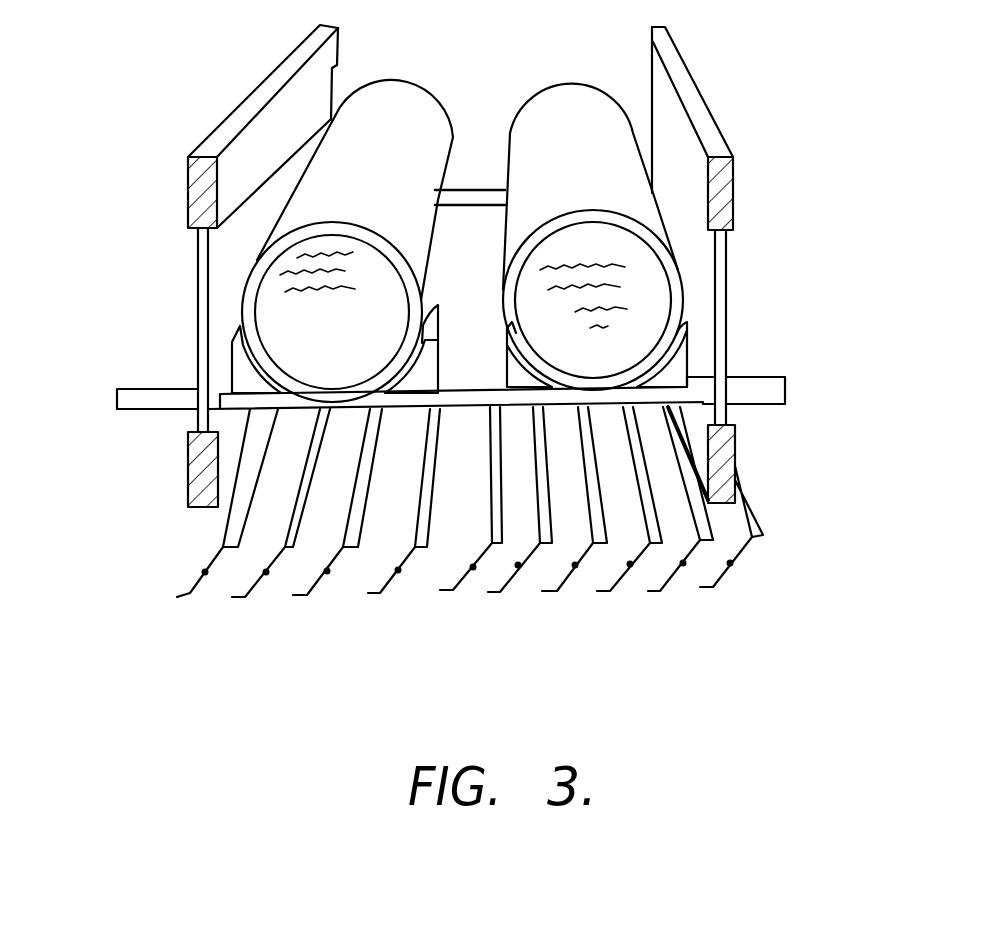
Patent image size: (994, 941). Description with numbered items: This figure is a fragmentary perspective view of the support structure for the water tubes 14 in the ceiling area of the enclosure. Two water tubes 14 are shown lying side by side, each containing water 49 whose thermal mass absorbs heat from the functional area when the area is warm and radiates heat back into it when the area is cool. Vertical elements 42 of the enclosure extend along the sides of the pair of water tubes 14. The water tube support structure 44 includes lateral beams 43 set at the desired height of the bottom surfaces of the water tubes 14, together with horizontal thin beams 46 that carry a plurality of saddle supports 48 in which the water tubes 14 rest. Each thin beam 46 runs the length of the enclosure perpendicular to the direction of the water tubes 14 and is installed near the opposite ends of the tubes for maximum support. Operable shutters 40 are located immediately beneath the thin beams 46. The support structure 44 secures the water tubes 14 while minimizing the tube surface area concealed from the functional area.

The water tubes 14 is at (678, 278).
The operable shutters 40 is at (732, 563).
The vertical elements 42 is at (698, 122).
The lateral beams 43 is at (190, 487).
The water tube support structure 44 is at (152, 328).
The horizontal thin beams 46 is at (762, 395).
The saddle supports 48 is at (673, 378).
The water 49 is at (532, 201).